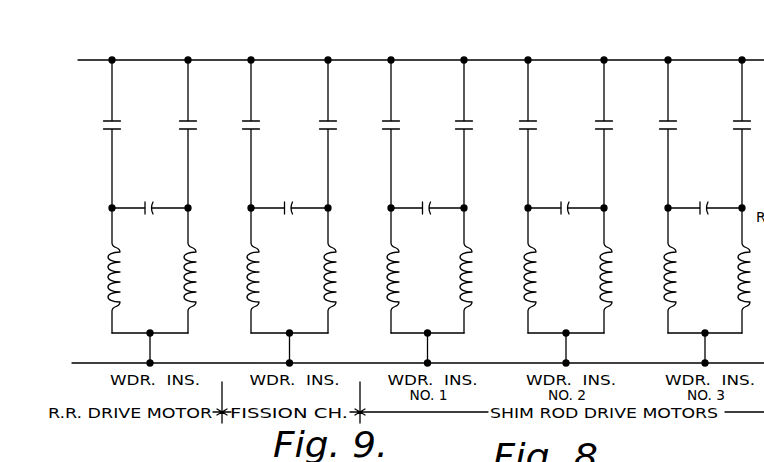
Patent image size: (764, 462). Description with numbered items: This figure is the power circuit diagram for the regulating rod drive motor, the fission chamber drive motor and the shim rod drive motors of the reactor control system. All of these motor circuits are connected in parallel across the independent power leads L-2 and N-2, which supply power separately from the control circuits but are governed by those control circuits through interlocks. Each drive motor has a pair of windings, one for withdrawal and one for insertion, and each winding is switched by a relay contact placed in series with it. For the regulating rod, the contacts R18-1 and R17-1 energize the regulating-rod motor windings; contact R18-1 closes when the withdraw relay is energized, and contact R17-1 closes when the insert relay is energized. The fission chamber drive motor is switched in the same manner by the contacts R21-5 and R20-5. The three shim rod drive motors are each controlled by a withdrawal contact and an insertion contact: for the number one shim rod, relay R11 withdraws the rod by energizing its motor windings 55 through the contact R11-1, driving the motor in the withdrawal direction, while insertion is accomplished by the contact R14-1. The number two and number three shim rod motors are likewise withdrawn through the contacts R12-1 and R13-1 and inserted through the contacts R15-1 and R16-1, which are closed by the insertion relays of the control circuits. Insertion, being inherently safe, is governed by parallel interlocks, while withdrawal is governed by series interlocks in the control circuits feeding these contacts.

The power lead L-2 is at (411, 59).
The power lead N-2 is at (336, 362).
The contact of withdraw relay R18 R18-1 is at (117, 123).
The contact of insert relay R17 R17-1 is at (184, 131).
The relay contact R21-5 is at (256, 123).
The relay contact R20-5 is at (324, 131).
The contact of relay R11 R11-1 is at (396, 123).
The contact of relay R14 R14-1 is at (460, 131).
The relay contact R12-1 is at (533, 123).
The contact of relay R15 R15-1 is at (600, 131).
The relay contact R13-1 is at (673, 123).
The contact of relay R16 R16-1 is at (738, 131).
The motor windings 55 is at (461, 275).